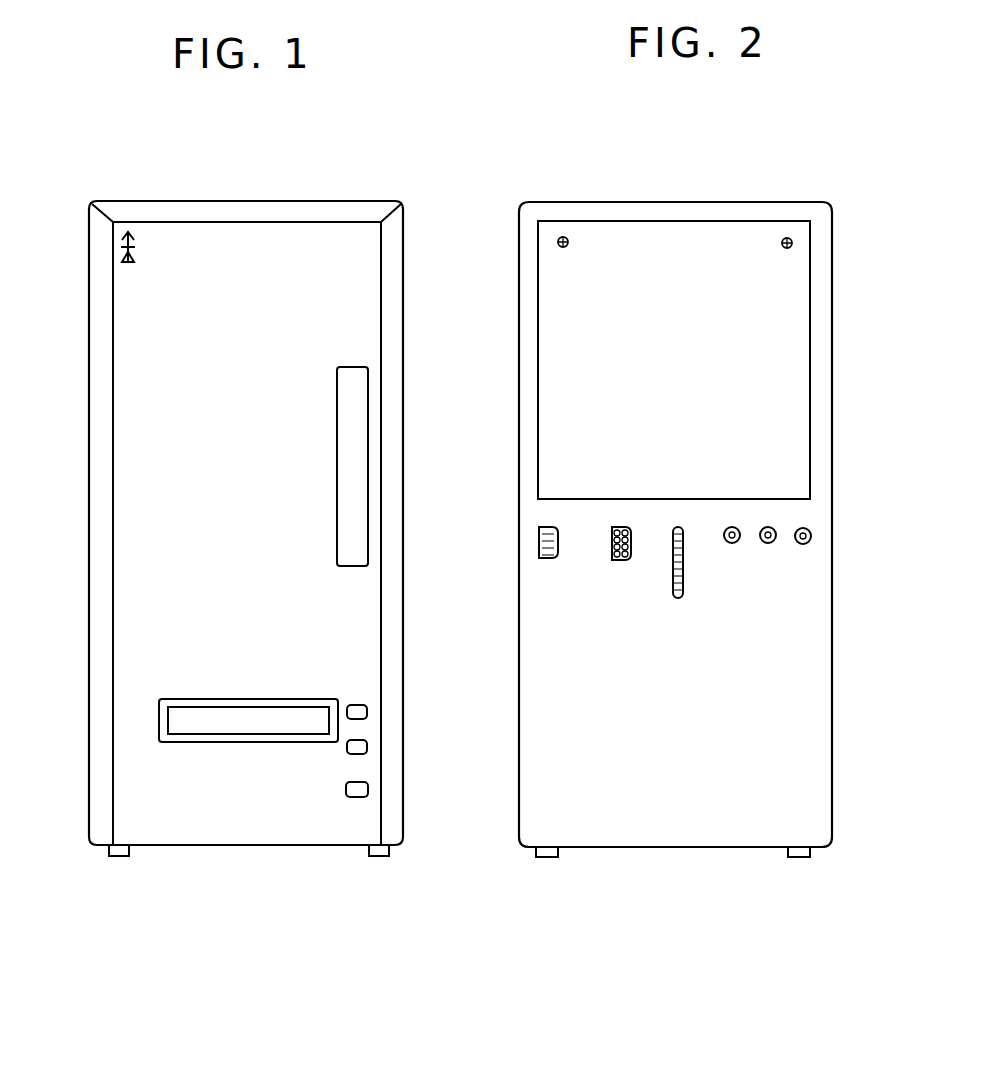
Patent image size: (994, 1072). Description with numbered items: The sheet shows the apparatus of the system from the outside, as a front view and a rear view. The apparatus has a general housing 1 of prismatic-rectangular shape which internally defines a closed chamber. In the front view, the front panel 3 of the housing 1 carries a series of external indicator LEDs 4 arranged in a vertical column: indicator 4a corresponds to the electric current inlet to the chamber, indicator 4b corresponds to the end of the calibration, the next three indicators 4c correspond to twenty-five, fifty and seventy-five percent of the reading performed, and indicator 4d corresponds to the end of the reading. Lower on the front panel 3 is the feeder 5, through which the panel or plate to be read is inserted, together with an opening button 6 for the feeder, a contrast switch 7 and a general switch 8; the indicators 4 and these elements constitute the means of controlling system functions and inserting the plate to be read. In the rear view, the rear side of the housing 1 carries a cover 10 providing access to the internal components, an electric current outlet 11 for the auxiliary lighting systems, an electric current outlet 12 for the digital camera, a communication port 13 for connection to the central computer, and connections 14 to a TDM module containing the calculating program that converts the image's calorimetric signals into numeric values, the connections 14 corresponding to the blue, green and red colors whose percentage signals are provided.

In FIG. 1, the general housing 1 is at (103, 768).
In FIG. 2, the general housing 1 is at (757, 202).
In FIG. 1, the front panel 3 is at (285, 262).
In FIG. 1, the external indicator LEDs 4 is at (335, 457).
In FIG. 1, the indicator 4a is at (368, 384).
In FIG. 1, the indicator 4b is at (368, 419).
In FIG. 1, the indicators 4c is at (368, 447).
In FIG. 1, the indicator 4d is at (368, 540).
In FIG. 1, the feeder 5 is at (247, 740).
In FIG. 1, the opening button 6 is at (363, 713).
In FIG. 1, the contrast switch 7 is at (363, 748).
In FIG. 1, the general switch 8 is at (363, 790).
In FIG. 2, the cover 10 is at (633, 282).
In FIG. 2, the electric current outlet 11 is at (548, 556).
In FIG. 2, the electric current outlet 12 is at (612, 558).
In FIG. 2, the communication port 13 is at (681, 597).
In FIG. 2, the connections 14 is at (738, 541).